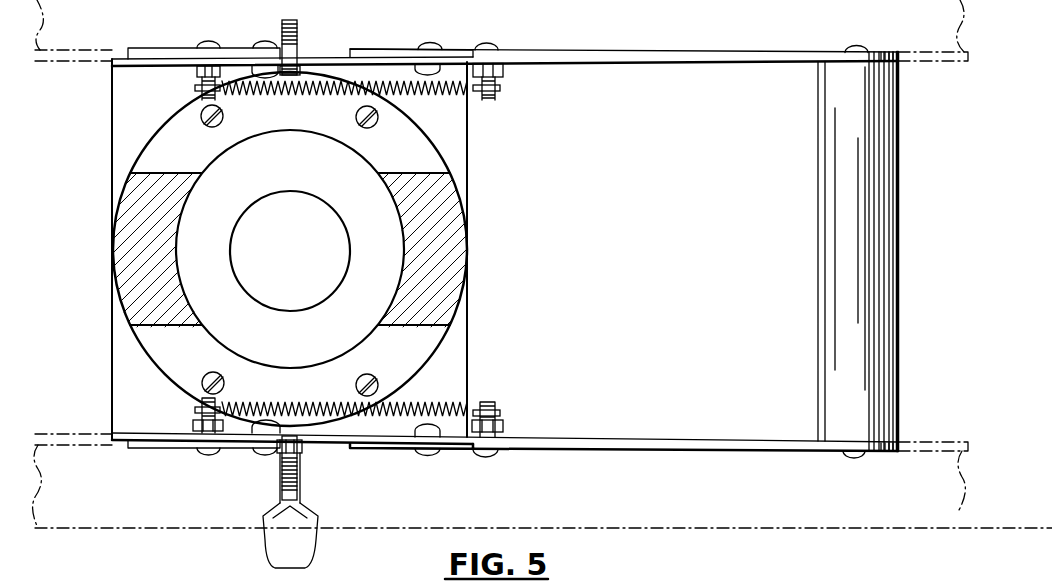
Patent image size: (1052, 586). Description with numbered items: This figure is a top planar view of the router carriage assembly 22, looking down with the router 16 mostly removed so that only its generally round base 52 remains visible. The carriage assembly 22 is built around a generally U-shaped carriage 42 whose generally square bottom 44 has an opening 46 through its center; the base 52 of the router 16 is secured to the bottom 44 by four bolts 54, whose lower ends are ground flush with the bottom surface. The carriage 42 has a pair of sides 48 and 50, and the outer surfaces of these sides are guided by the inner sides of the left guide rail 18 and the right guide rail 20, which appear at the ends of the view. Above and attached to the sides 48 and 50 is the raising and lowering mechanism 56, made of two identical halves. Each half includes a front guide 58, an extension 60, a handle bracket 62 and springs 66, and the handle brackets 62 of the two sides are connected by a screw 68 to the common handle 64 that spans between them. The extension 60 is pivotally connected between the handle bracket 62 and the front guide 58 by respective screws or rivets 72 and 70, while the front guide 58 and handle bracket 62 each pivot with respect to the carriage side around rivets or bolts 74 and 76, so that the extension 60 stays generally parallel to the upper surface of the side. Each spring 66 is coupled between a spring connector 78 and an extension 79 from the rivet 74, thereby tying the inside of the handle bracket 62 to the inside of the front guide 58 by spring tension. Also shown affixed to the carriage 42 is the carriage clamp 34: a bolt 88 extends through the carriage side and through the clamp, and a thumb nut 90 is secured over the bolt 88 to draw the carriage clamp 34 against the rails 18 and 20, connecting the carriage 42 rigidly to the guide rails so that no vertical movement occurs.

The router 16 is at (468, 226).
The left guide rail 18 is at (918, 440).
The right guide rail 20 is at (926, 64).
The router carriage assembly 22 is at (621, 209).
The carriage clamp 34 is at (306, 456).
The carriage 42 is at (471, 134).
The bottom 44 is at (467, 163).
The opening 46 is at (336, 216).
The side 48 is at (146, 428).
The side 50 is at (158, 68).
The base 52 is at (402, 129).
The bolts 54 is at (204, 123).
The raising and lowering mechanism 56 is at (632, 44).
The front guide 58 is at (165, 48).
The extension 60 is at (318, 57).
The handle bracket 62 is at (767, 63).
The handle 64 is at (818, 219).
The springs 66 is at (248, 99).
The screw 68 is at (862, 48).
The screw or rivet 70 is at (267, 42).
The screw or rivet 72 is at (497, 43).
The rivet or bolt 74 is at (214, 42).
The rivet or bolt 76 is at (433, 43).
The spring connector 78 is at (497, 95).
The extension 79 is at (197, 404).
The bolts 88 is at (297, 20).
The thumb nut 90 is at (268, 552).